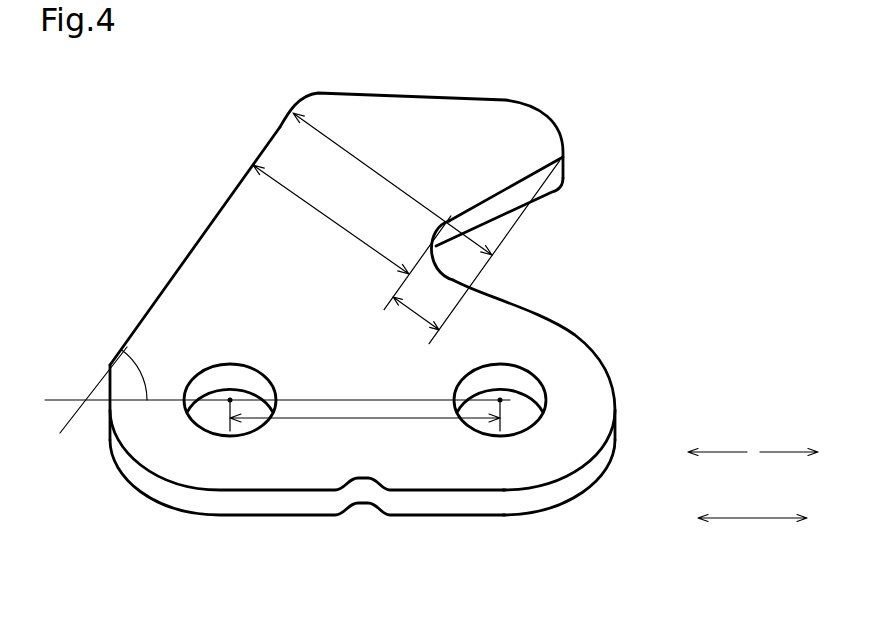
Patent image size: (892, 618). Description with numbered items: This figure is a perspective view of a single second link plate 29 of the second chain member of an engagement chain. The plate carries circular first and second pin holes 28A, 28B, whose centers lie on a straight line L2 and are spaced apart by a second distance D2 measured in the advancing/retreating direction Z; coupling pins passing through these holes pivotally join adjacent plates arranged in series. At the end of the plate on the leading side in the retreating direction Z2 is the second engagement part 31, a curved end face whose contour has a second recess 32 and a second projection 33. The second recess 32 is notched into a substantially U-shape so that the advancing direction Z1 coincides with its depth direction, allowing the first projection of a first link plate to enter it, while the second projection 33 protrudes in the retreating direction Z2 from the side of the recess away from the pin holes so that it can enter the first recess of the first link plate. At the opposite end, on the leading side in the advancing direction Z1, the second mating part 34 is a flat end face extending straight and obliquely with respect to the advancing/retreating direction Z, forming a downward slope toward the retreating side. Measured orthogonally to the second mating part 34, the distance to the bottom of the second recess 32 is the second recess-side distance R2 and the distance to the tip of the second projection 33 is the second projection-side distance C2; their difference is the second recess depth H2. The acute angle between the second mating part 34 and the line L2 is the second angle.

The second link plate 29 is at (595, 66).
The first pin hole 28A is at (503, 378).
The second pin hole 28B is at (233, 378).
The second engagement part 31 is at (647, 170).
The second recess 32 is at (437, 248).
The second projection 33 is at (563, 177).
The second mating part 34 is at (206, 230).
The second projection-side distance C2 is at (390, 177).
The second recess-side distance R2 is at (330, 219).
The second recess depth H2 is at (404, 312).
The straight line connecting the first and second pin holes L2 is at (363, 400).
The second distance D2 is at (406, 421).
The advancing/retreating direction Z is at (752, 504).
The advancing direction Z1 is at (717, 437).
The retreating direction Z2 is at (789, 437).